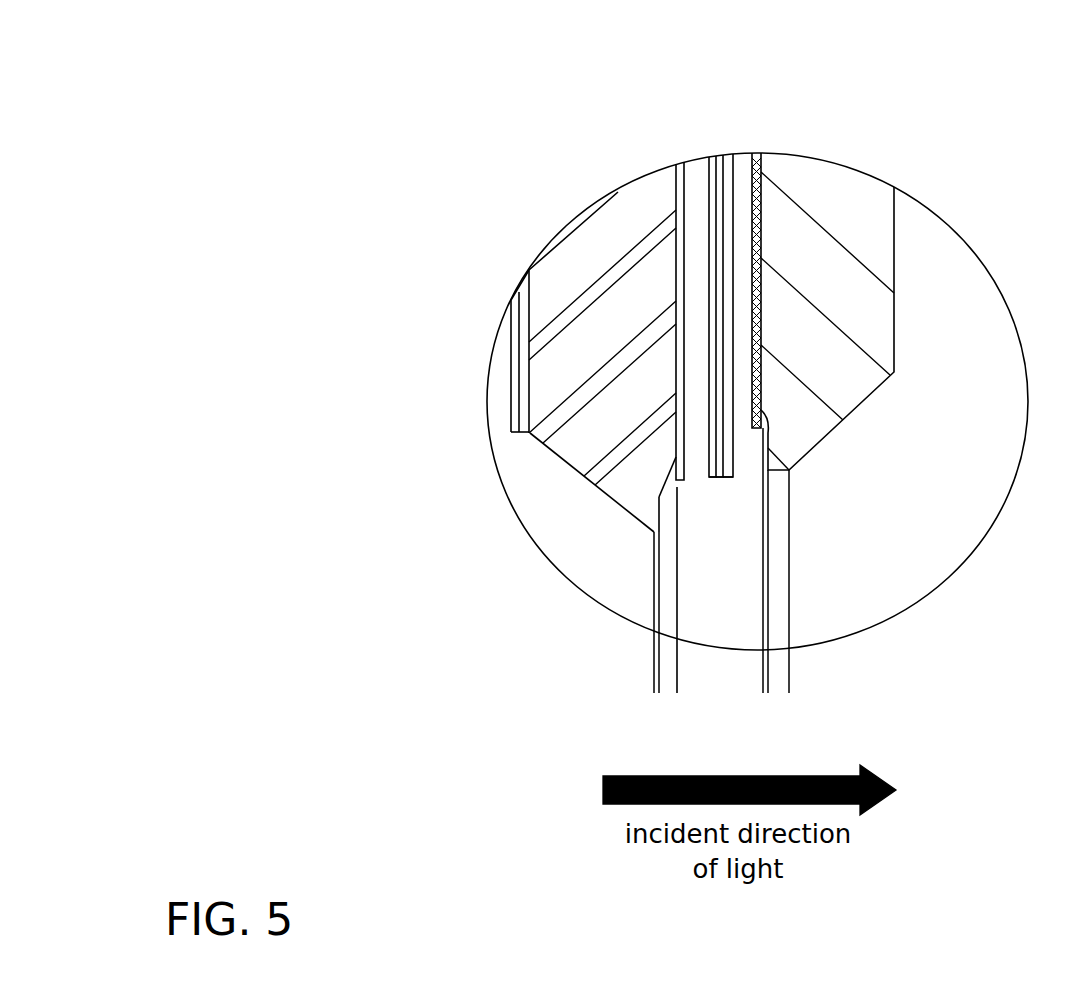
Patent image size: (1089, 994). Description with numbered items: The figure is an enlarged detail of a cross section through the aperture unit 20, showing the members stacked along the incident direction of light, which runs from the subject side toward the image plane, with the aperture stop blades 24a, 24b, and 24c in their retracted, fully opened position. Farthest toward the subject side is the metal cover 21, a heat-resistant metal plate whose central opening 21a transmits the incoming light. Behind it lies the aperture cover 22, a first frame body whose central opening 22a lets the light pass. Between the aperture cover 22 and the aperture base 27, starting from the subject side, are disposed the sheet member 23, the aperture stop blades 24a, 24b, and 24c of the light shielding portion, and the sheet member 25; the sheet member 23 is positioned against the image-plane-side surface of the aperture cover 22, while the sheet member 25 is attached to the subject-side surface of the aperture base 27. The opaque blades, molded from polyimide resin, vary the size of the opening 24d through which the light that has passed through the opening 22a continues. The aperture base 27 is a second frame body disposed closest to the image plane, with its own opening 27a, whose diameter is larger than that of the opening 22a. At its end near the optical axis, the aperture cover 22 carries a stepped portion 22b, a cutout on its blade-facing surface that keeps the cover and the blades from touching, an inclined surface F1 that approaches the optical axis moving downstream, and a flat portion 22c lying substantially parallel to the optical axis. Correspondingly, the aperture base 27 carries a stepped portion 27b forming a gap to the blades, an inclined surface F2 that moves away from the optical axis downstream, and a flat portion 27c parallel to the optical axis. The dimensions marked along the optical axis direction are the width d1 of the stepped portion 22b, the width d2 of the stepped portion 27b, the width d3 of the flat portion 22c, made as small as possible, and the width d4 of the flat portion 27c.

The aperture unit 20 is at (602, 101).
The metal cover 21 is at (513, 365).
The opening 21a is at (499, 449).
The aperture cover 22 is at (597, 228).
The opening 22a is at (634, 566).
The stepped portion 22b is at (659, 497).
The flat portion 22c is at (654, 532).
The sheet member 23 is at (677, 165).
The aperture stop blade 24a is at (710, 141).
The aperture stop blade 24b is at (719, 316).
The aperture stop blade 24c is at (728, 315).
The opening 24d is at (705, 533).
The sheet member 25 is at (762, 172).
The aperture base 27 is at (861, 203).
The opening 27a is at (815, 492).
The stepped portion 27b is at (768, 448).
The flat portion 27c is at (789, 470).
The inclined surface F1 is at (580, 467).
The inclined surface F2 is at (830, 432).
The width of stepped portion d1 is at (688, 684).
The width of stepped portion d2 is at (779, 683).
The width of flat portion d3 is at (670, 663).
The width of flat portion d4 is at (740, 663).